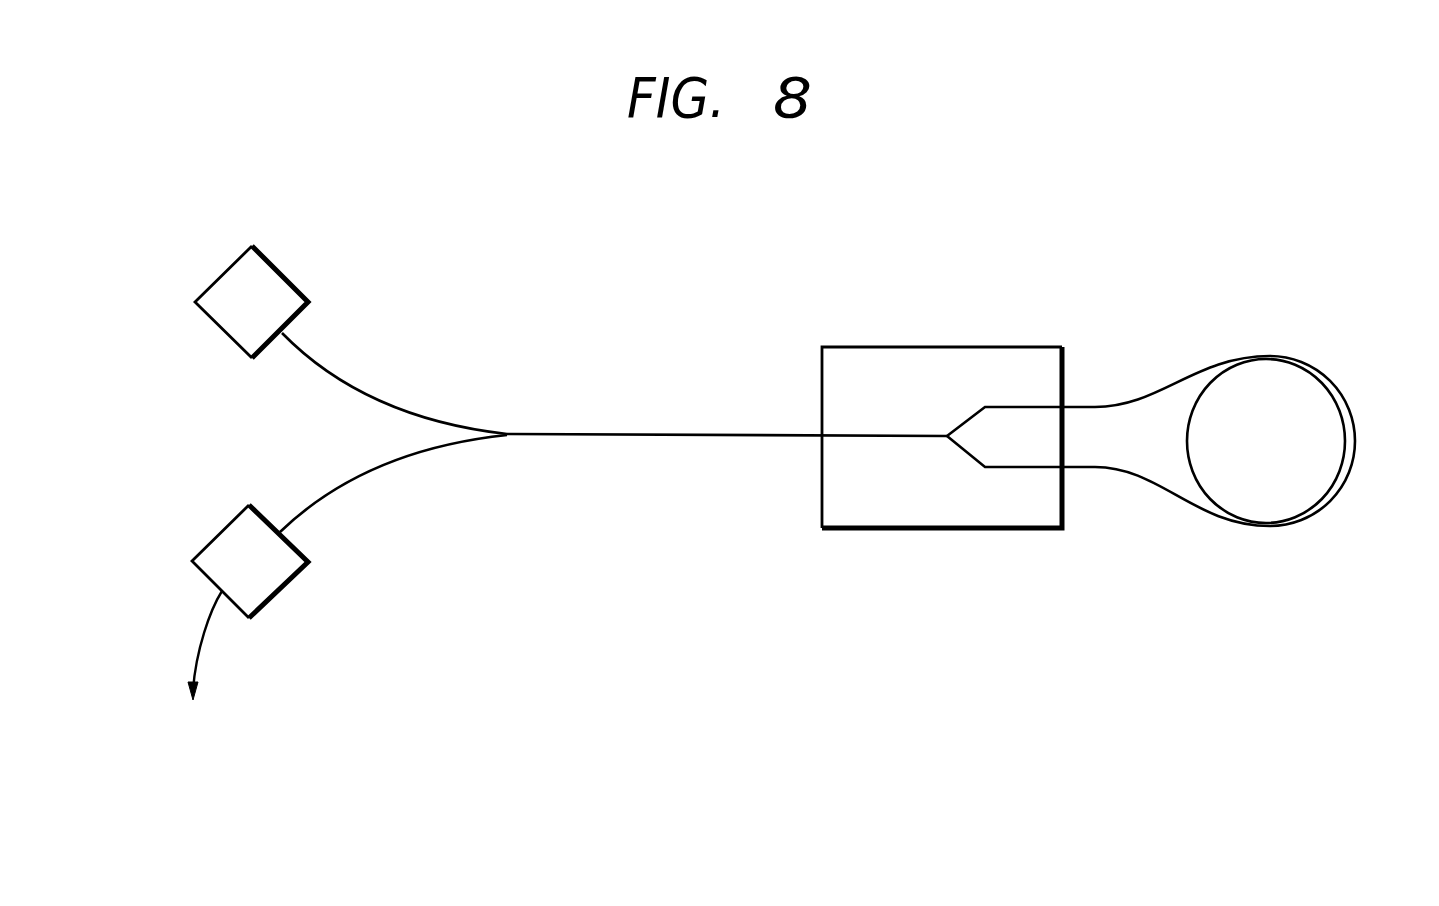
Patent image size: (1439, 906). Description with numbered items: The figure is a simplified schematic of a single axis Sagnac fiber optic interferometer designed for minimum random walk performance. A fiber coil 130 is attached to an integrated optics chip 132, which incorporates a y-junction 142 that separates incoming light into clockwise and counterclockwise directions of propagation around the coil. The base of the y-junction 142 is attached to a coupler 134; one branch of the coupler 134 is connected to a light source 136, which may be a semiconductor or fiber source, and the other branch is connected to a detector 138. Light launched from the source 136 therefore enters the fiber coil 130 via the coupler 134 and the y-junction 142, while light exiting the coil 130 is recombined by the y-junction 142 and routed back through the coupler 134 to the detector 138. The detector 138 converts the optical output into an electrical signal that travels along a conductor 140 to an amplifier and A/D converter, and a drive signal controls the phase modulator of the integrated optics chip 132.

The fiber coil 130 is at (1347, 440).
The integrated optics chip 132 is at (940, 347).
The coupler 134 is at (568, 433).
The light source 136 is at (282, 273).
The detector 138 is at (285, 588).
The conductor 140 is at (198, 677).
The y-junction 142 is at (1025, 468).